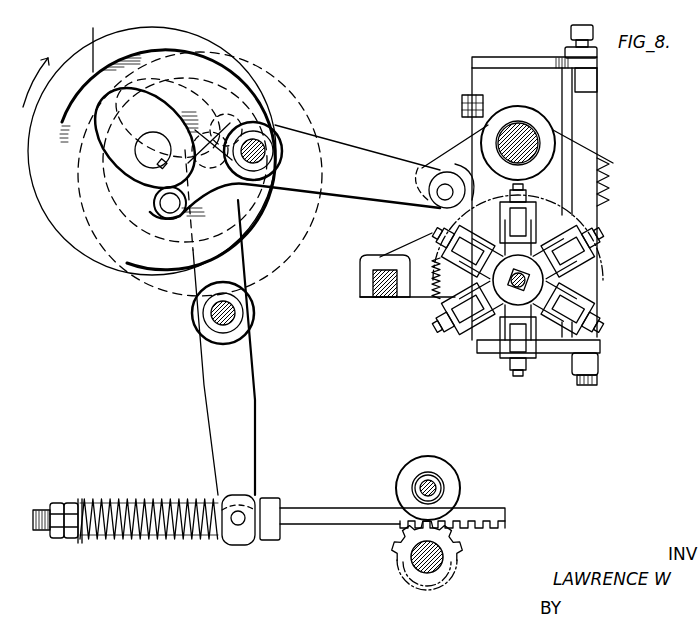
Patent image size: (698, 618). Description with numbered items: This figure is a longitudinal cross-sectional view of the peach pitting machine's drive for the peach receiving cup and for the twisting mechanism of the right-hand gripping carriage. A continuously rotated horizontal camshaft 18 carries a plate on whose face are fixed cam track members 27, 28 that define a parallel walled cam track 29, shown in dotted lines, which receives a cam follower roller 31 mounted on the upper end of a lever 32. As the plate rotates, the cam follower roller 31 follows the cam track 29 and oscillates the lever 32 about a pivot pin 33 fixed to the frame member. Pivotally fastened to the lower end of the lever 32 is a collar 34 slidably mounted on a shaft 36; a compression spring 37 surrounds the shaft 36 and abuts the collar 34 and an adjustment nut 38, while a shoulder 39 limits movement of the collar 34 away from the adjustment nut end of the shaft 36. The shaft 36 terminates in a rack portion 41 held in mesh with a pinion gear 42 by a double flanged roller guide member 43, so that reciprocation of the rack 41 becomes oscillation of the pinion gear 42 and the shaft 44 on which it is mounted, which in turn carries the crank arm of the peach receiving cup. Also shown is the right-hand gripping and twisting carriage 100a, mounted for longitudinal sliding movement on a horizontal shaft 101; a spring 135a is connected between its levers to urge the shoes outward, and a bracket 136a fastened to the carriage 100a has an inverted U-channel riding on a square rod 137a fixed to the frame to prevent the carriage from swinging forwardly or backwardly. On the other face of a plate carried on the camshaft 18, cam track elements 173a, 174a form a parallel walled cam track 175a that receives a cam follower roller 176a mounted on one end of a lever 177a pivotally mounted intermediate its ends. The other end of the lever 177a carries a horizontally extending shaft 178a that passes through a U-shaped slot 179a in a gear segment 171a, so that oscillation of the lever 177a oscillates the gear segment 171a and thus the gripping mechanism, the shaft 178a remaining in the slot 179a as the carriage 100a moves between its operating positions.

The camshaft 18 is at (158, 124).
The cam track member 27 is at (173, 43).
The cam track member 28 is at (226, 58).
The cam track 29 is at (242, 97).
The cam follower roller 31 is at (262, 198).
The lever 32 is at (247, 270).
The pivot pin 33 is at (235, 313).
The collar 34 is at (245, 545).
The shaft 36 is at (318, 527).
The compression spring 37 is at (128, 498).
The adjustment nut 38 is at (72, 538).
The shoulder 39 is at (272, 498).
The rack portion 41 is at (470, 508).
The pinion gear 42 is at (448, 557).
The double flanged roller guide member 43 is at (435, 467).
The shaft 44 is at (422, 565).
The carriage 100a is at (615, 126).
The horizontal shaft 101 is at (520, 140).
The spring 135a is at (433, 240).
The bracket 136a is at (375, 260).
The square rod 137a is at (383, 288).
The gear segment 171a is at (612, 164).
The cam track element 173a is at (115, 45).
The cam track element 174a is at (122, 100).
The cam track 175a is at (93, 31).
The cam follower roller 176a is at (148, 218).
The lever 177a is at (325, 182).
The shaft 178a is at (440, 180).
The U-shaped slot 179a is at (462, 167).